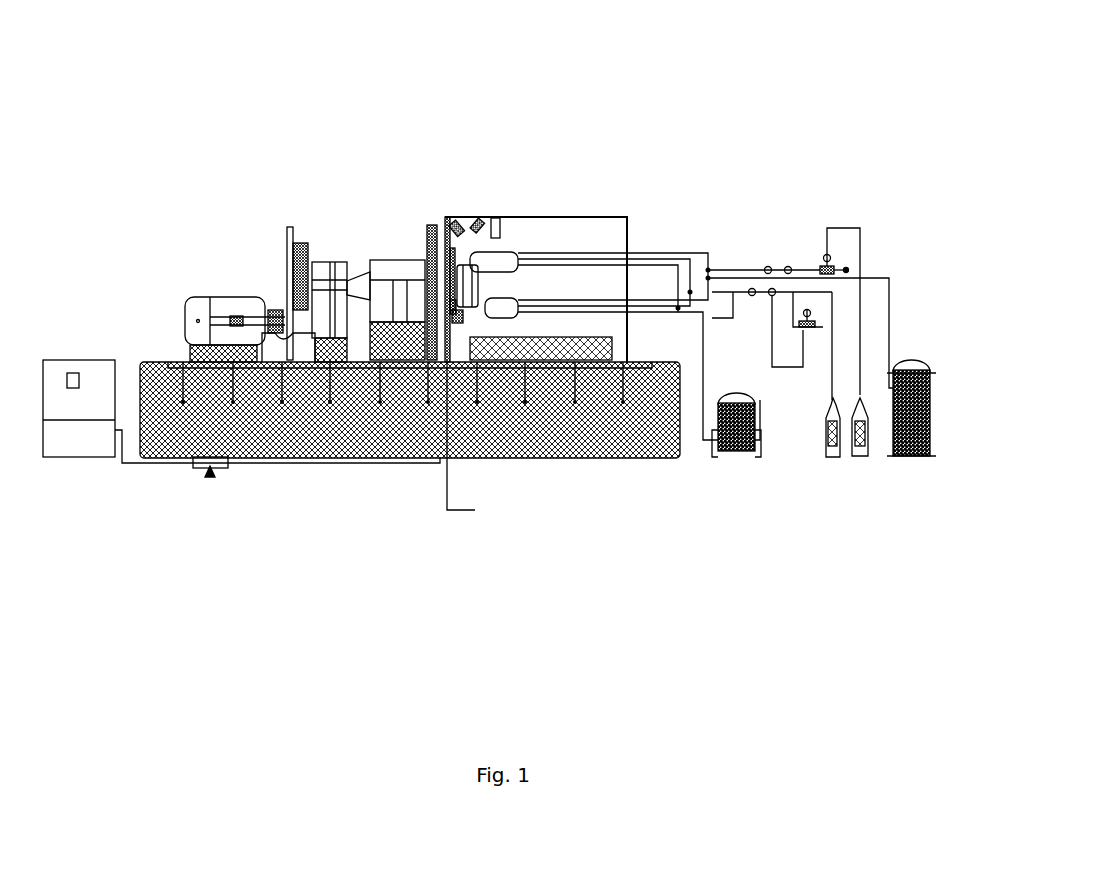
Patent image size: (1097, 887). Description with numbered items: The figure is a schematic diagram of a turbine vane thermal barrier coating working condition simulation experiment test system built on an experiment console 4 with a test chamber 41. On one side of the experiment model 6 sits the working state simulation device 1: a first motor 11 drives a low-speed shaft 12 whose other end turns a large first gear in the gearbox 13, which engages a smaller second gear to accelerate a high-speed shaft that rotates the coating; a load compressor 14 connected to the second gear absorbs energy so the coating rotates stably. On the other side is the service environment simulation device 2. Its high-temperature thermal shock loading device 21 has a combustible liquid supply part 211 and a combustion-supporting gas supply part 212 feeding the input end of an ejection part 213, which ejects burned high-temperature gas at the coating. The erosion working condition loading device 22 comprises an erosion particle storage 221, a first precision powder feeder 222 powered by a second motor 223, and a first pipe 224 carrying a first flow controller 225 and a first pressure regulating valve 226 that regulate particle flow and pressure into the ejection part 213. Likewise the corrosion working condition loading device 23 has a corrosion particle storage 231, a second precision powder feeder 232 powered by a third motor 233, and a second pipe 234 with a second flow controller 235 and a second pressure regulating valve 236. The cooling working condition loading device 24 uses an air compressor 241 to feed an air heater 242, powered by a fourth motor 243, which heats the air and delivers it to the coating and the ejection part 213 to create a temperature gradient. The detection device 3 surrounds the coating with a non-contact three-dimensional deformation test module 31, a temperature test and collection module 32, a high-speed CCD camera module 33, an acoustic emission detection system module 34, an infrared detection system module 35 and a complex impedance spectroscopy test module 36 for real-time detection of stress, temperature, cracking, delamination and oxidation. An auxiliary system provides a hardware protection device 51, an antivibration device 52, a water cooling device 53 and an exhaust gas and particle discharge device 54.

The working state simulation device 1 is at (305, 320).
The first motor 11 is at (210, 292).
The low-speed shaft 12 is at (272, 312).
The gearbox 13 is at (337, 262).
The load compressor 14 is at (294, 243).
The service environment simulation device 2 is at (501, 376).
The high-temperature thermal shock loading device 21 is at (720, 442).
The combustible liquid supply part 211 is at (728, 460).
The combustion-supporting gas supply part 212 is at (822, 415).
The ejection part 213 is at (504, 314).
The erosion working condition loading device 22 is at (775, 234).
The erosion particle storage 221 is at (862, 403).
The first precision powder feeder 222 is at (820, 253).
The second motor 223 is at (846, 262).
The first pipe 224 is at (723, 263).
The first flow controller 225 is at (762, 263).
The first pressure regulating valve 226 is at (784, 262).
The corrosion working condition loading device 23 is at (790, 424).
The corrosion particle storage 231 is at (858, 482).
The second precision powder feeder 232 is at (805, 333).
The third motor 233 is at (829, 338).
The second pipe 234 is at (752, 300).
The second flow controller 235 is at (733, 300).
The second pressure regulating valve 236 is at (772, 300).
The cooling working condition loading device 24 is at (241, 491).
The air compressor 241 is at (77, 467).
The air heater 242 is at (195, 470).
The fourth motor 243 is at (224, 508).
The detection device 3 is at (433, 275).
The non-contact three-dimensional deformation test module 31 is at (436, 222).
The temperature test and collection module 32 is at (455, 213).
The high-speed CCD camera module 33 is at (480, 213).
The acoustic emission detection system module 34 is at (442, 248).
The infrared detection system module 35 is at (500, 213).
The complex impedance spectroscopy test module 36 is at (445, 307).
The experiment console 4 is at (378, 428).
The test chamber 41 is at (542, 233).
The hardware protection device 51 is at (242, 362).
The antivibration device 52 is at (407, 428).
The water cooling device 53 is at (505, 340).
The exhaust gas and particle discharge device 54 is at (460, 378).
The experiment model 6 is at (463, 318).